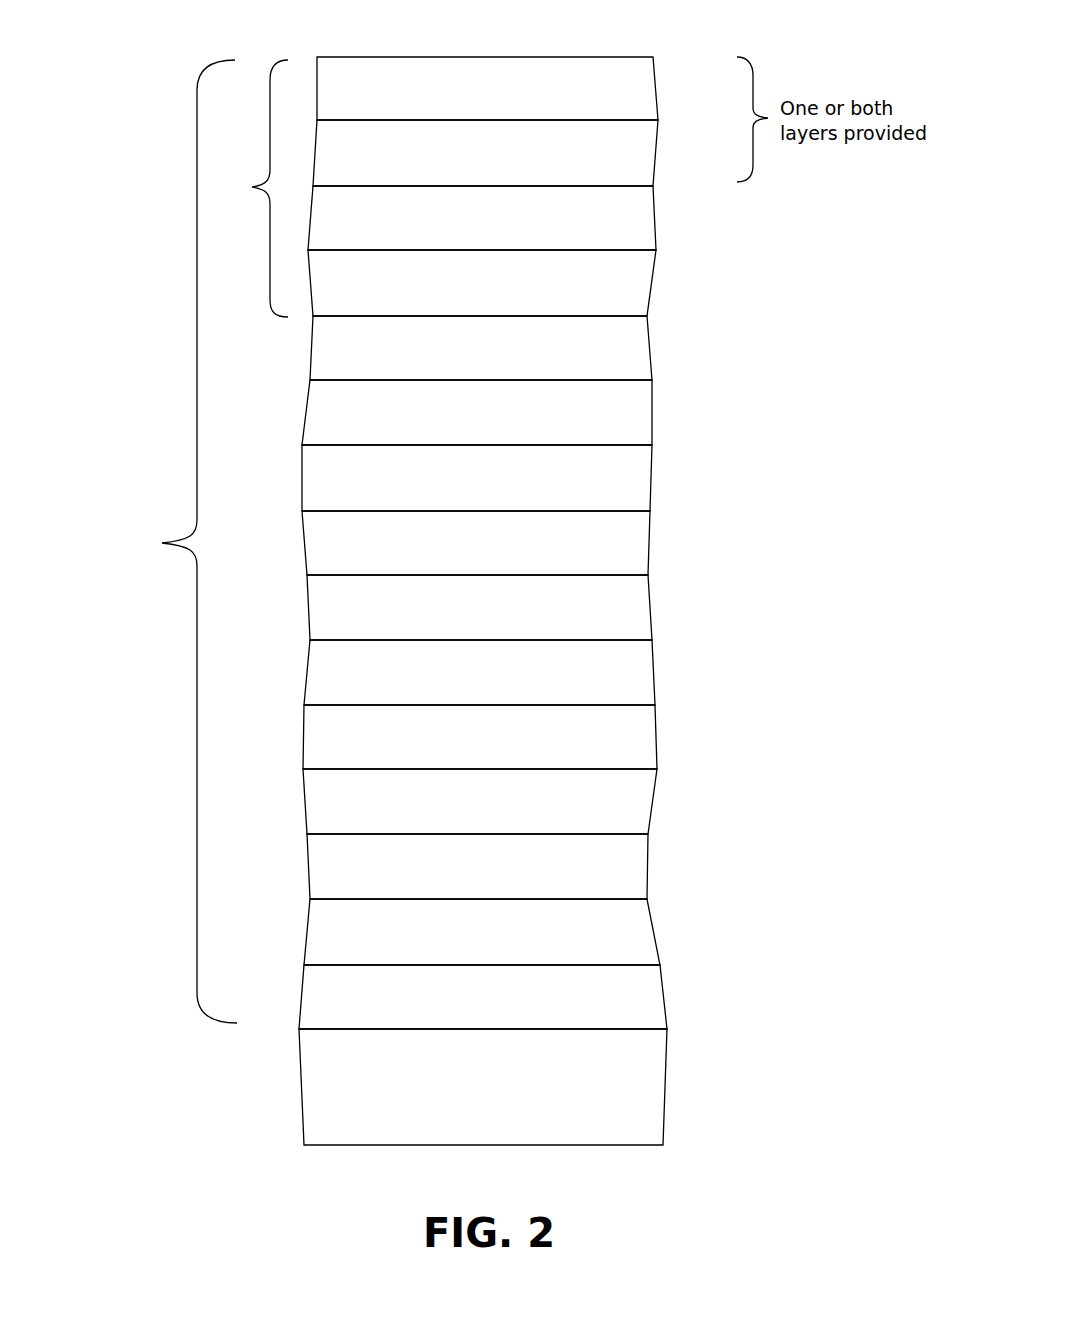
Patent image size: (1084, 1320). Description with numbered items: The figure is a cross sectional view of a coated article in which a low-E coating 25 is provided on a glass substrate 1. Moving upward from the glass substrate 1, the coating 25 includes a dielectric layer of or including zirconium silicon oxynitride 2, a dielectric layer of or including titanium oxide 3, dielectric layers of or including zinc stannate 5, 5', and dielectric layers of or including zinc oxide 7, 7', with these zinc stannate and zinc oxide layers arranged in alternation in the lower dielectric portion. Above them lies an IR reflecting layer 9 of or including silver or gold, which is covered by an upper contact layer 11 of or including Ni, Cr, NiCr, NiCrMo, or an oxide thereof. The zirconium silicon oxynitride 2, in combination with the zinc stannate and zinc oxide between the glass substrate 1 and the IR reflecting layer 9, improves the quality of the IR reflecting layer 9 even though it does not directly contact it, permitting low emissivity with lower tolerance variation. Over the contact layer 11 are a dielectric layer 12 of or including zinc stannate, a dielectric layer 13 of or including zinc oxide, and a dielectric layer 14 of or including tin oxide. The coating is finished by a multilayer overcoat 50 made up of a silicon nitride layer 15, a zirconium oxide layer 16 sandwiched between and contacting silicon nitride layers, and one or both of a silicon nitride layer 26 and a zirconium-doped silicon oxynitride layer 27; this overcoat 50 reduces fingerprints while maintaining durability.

The glass substrate 1 is at (657, 1082).
The zirconium silicon oxynitride layer 2 is at (650, 998).
The titanium oxide layer 3 is at (645, 942).
The zinc stannate layer 5 is at (515, 862).
The zinc stannate layer 5' is at (517, 731).
The zinc oxide layer 7 is at (514, 666).
The zinc oxide layer 7' is at (518, 792).
The IR reflecting layer 9 is at (633, 610).
The upper contact layer 11 is at (636, 552).
The zinc stannate dielectric layer 12 is at (642, 478).
The zinc oxide dielectric layer 13 is at (642, 420).
The tin oxide dielectric layer 14 is at (645, 337).
The silicon nitride layer 15 is at (632, 284).
The zirconium oxide layer 16 is at (635, 222).
The low-E coating 25 is at (180, 480).
The silicon nitride layer 26 is at (645, 160).
The zirconium-doped silicon oxynitride layer 27 is at (645, 99).
The multilayer overcoat 50 is at (248, 165).